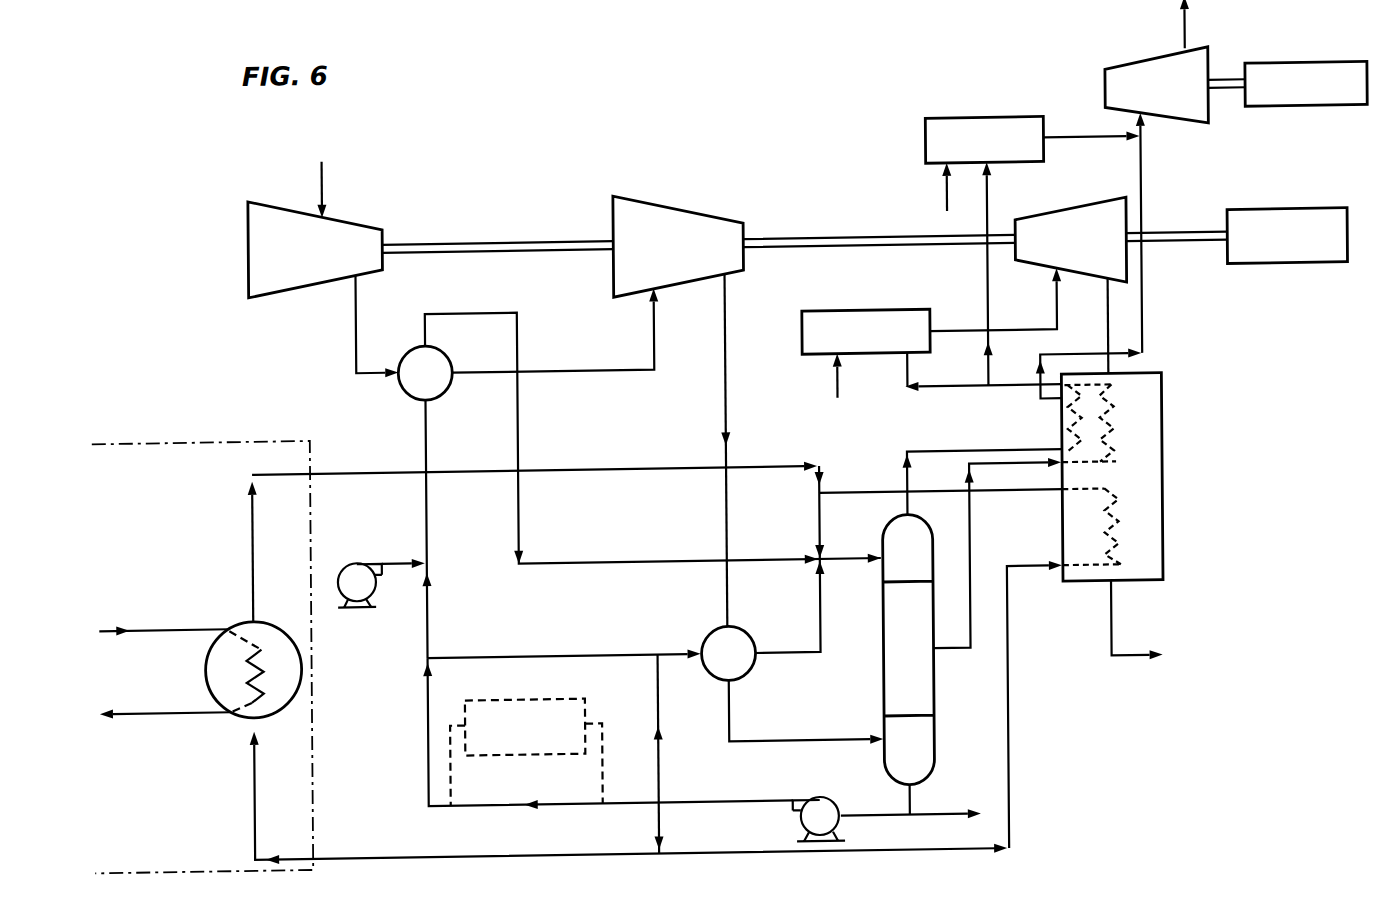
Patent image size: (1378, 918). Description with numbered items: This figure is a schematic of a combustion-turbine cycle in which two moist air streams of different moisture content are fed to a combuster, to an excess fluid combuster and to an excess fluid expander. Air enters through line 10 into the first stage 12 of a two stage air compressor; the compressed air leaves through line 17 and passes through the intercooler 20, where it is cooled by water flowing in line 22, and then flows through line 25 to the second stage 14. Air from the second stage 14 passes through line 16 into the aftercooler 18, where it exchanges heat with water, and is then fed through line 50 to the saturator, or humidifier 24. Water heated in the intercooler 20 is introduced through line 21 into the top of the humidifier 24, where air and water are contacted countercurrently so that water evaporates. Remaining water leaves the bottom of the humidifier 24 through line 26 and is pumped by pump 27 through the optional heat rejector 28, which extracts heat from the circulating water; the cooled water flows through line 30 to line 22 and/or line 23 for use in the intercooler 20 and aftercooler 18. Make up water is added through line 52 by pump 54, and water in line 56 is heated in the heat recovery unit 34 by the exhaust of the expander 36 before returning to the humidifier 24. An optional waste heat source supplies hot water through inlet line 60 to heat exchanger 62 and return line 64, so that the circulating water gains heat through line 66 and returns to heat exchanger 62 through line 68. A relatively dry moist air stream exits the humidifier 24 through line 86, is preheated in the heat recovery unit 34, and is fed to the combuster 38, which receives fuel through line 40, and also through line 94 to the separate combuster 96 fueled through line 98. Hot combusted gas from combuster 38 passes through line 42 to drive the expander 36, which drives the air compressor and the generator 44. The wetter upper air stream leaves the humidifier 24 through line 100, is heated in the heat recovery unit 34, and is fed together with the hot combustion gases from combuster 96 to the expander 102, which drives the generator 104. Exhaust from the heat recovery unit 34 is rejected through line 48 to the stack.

The air line 10 is at (325, 174).
The first stage 12 is at (249, 222).
The second stage 14 is at (658, 203).
The line 16 is at (727, 354).
The line 17 is at (357, 283).
The heat exchanger 18 is at (714, 626).
The heat exchanger 20 is at (412, 343).
The line 21 is at (672, 548).
The line 22 is at (426, 491).
The line 23 is at (517, 649).
The saturator 24 is at (882, 674).
The line 25 is at (654, 318).
The line 26 is at (920, 803).
The pump 27 is at (817, 798).
The heat exchanger 28 is at (578, 682).
The line 30 is at (426, 685).
The heat recovery unit 34 is at (1162, 396).
The expander 36 is at (1100, 204).
The combuster 38 is at (899, 313).
The line 40 is at (838, 390).
The line 42 is at (1034, 335).
The generator 44 is at (1326, 218).
The line 48 is at (1110, 612).
The line 50 is at (727, 713).
The line 52 is at (398, 572).
The pump 54 is at (357, 556).
The line 56 is at (1006, 640).
The hot water medium inlet line 60 is at (210, 620).
The heat exchanger 62 is at (258, 614).
The return line 64 is at (169, 706).
The line 66 is at (350, 468).
The line 68 is at (378, 850).
The line 86 is at (969, 520).
The line 94 is at (989, 283).
The combuster 96 is at (1006, 122).
The line 98 is at (949, 188).
The line 100 is at (906, 469).
The expander 102 is at (1133, 72).
The generator 104 is at (1287, 71).